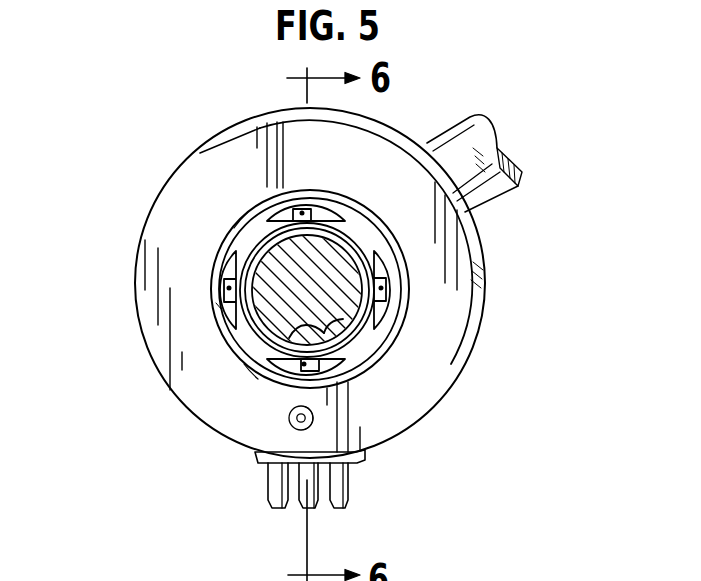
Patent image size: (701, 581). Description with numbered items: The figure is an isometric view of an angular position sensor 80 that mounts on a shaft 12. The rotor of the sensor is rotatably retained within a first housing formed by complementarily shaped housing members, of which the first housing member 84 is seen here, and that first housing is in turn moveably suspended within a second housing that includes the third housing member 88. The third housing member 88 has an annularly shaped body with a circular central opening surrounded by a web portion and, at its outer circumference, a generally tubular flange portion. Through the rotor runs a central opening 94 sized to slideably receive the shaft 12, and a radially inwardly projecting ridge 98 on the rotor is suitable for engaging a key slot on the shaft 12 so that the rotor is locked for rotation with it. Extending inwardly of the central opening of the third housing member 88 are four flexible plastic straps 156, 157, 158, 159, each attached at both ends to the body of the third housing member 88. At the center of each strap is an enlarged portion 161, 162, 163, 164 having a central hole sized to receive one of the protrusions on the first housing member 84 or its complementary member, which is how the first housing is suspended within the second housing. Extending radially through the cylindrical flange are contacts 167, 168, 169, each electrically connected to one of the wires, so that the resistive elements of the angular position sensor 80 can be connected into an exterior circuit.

The shaft 12 is at (450, 118).
The angular position sensor 80 is at (492, 378).
The first housing member 84 is at (348, 221).
The third housing member 88 is at (489, 249).
The central opening 94 is at (334, 313).
The radially inwardly projecting ridge 98 is at (309, 325).
The flexible plastic strap 156 is at (240, 232).
The flexible plastic strap 157 is at (395, 306).
The flexible plastic strap 158 is at (250, 373).
The flexible plastic strap 159 is at (216, 303).
The enlarged portion 161 is at (302, 212).
The enlarged portion 162 is at (392, 247).
The enlarged portion 163 is at (283, 366).
The enlarged portion 164 is at (228, 278).
The contact 167 is at (280, 509).
The contact 168 is at (298, 496).
The contact 169 is at (346, 509).